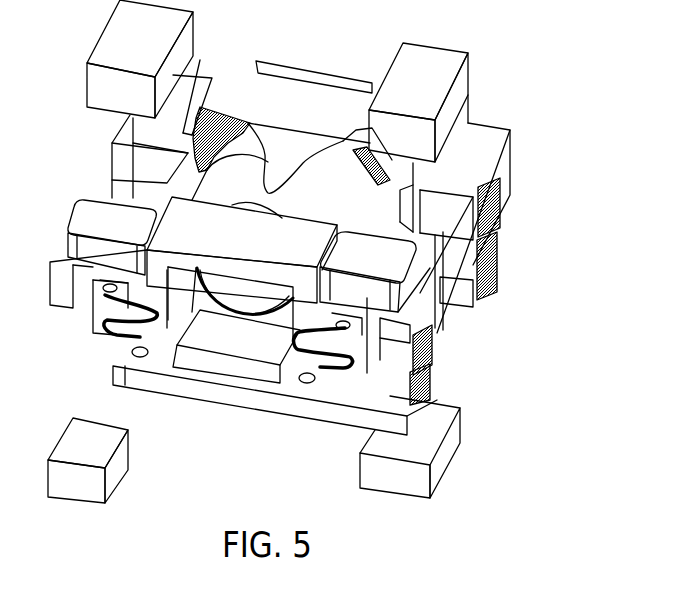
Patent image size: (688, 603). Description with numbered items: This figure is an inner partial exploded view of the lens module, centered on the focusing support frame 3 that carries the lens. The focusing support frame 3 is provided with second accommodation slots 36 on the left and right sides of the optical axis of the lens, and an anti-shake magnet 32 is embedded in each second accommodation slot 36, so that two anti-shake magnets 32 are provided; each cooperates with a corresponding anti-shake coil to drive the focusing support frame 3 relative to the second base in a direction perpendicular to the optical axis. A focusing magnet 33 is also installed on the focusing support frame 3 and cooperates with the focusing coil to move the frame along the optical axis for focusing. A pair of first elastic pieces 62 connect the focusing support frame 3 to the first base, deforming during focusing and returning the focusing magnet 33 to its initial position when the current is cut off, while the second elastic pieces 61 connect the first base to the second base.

The focusing support frame 3 is at (502, 160).
The anti-shake magnet 32 is at (110, 87).
The focusing magnet 33 is at (123, 452).
The second accommodation slot 36 is at (118, 183).
The second elastic piece 61 is at (495, 253).
The first elastic piece 62 is at (107, 323).